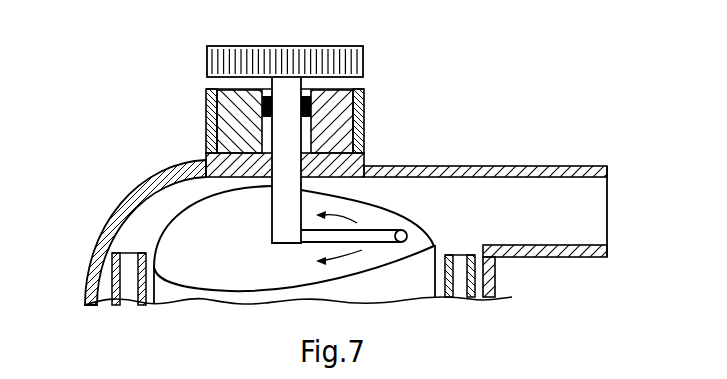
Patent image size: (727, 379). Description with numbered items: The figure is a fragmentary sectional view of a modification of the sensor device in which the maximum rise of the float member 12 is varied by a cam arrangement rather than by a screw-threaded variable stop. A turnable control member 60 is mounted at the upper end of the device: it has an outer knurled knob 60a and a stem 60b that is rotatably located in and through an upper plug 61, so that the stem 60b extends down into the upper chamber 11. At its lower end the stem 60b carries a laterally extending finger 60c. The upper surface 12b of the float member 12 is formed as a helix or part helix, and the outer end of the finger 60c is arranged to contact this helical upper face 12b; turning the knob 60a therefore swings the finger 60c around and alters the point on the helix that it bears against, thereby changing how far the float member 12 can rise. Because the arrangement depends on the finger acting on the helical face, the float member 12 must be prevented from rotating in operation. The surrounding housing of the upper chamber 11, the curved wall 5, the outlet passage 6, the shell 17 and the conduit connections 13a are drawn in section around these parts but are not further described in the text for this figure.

The dome-shaped housing wall 5 is at (164, 168).
The outlet tube 6 is at (552, 166).
The upper chamber 11 is at (160, 212).
The float member 12 is at (397, 204).
The upper surface of the float member 12b is at (380, 253).
The connecting tubes 13a is at (120, 251).
The actuator housing shell 17 is at (216, 113).
The control member 60 is at (331, 125).
The knurled knob 60a is at (372, 23).
The stem 60b is at (287, 153).
The laterally extending finger 60c is at (404, 231).
The upper plug 61 is at (333, 120).